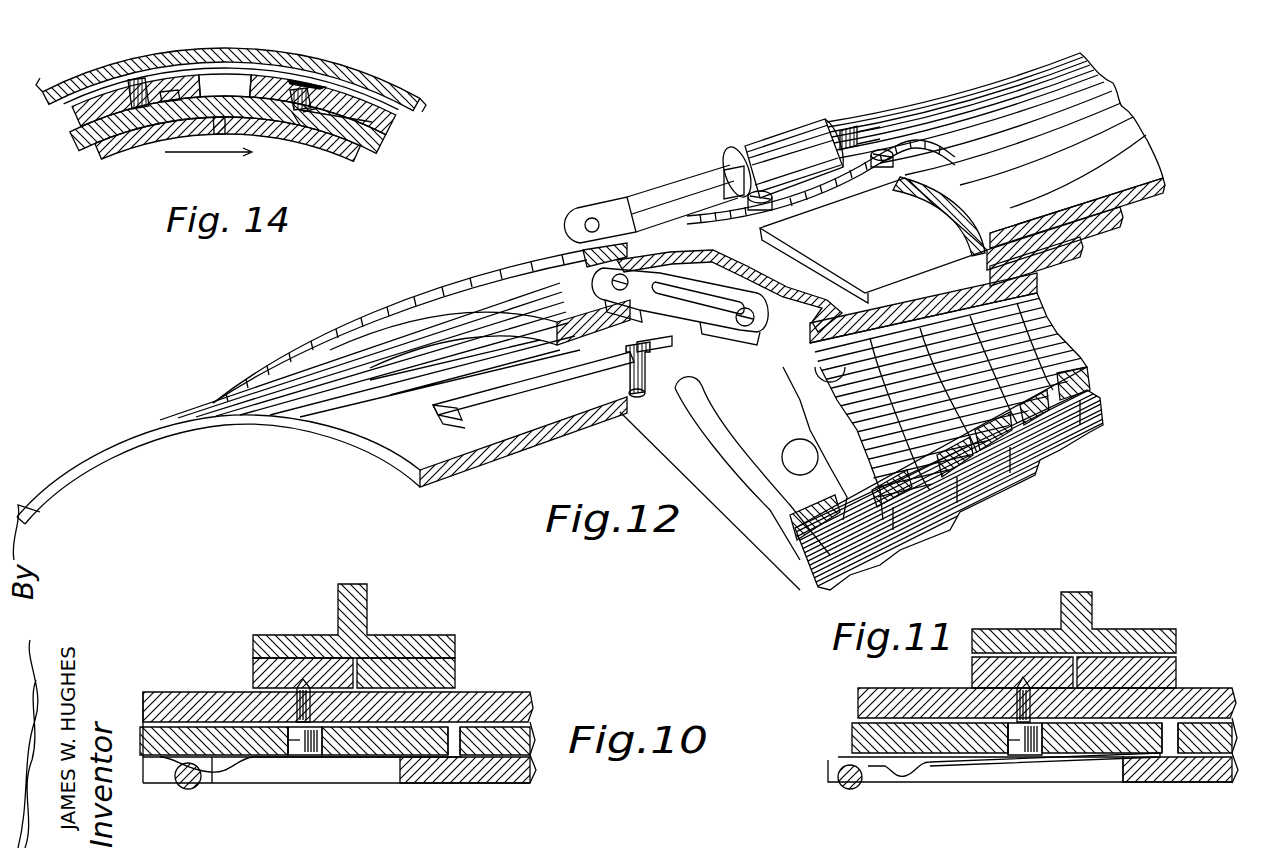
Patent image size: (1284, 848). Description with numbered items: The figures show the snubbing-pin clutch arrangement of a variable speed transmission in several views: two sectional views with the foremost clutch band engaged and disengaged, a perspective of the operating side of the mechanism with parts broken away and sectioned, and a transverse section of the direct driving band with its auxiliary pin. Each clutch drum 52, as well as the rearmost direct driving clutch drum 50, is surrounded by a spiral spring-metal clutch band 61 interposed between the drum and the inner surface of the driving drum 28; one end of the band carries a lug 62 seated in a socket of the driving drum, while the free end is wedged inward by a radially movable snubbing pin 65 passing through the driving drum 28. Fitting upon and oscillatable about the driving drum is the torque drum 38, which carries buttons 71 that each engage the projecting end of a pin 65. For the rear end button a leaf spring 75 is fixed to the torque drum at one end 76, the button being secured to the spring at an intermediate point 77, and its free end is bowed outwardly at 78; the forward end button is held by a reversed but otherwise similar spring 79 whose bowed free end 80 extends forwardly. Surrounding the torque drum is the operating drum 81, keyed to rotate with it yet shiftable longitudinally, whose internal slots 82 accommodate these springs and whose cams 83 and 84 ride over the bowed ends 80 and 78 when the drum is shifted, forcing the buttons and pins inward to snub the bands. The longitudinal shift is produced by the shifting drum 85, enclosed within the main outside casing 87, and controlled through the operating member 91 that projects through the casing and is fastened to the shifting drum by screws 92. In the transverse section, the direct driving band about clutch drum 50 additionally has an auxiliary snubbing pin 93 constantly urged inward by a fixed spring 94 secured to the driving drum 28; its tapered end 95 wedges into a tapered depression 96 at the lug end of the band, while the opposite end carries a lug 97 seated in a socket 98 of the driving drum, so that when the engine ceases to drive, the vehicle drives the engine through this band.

In FIG. 14, the driving drum 28 is at (386, 136).
In FIG. 10, the driving drum 28 is at (478, 698).
In FIG. 11, the driving drum 28 is at (1205, 700).
In FIG. 12, the torque drum 38 is at (350, 418).
In FIG. 10, the torque drum 38 is at (542, 742).
In FIG. 11, the torque drum 38 is at (1210, 738).
In FIG. 14, the clutch drum 50 is at (122, 132).
In FIG. 12, the clutch drum 52 is at (1050, 450).
In FIG. 10, the clutch drum 52 is at (392, 645).
In FIG. 11, the clutch drum 52 is at (1112, 640).
In FIG. 14, the clutch band 61 is at (345, 135).
In FIG. 12, the clutch band 61 is at (1058, 352).
In FIG. 10, the clutch band 61 is at (270, 664).
In FIG. 11, the clutch band 61 is at (1150, 670).
In FIG. 14, the lug 62 is at (290, 90).
In FIG. 12, the lug 62 is at (795, 462).
In FIG. 14, the snubbing pin 65 is at (130, 80).
In FIG. 10, the snubbing pin 65 is at (292, 692).
In FIG. 11, the snubbing pin 65 is at (1012, 698).
In FIG. 12, the button 71 is at (672, 340).
In FIG. 10, the button 71 is at (312, 752).
In FIG. 11, the button 71 is at (1020, 758).
In FIG. 12, the leaf spring 75 is at (538, 382).
In FIG. 12, the fixed end 76 is at (462, 418).
In FIG. 12, the button securing point 77 is at (634, 397).
In FIG. 10, the button securing point 77 is at (305, 760).
In FIG. 11, the button securing point 77 is at (1030, 756).
In FIG. 12, the outwardly bowed end 78 is at (715, 330).
In FIG. 10, the spring 79 is at (290, 756).
In FIG. 11, the spring 79 is at (980, 762).
In FIG. 10, the outwardly bowed free end 80 is at (210, 775).
In FIG. 11, the outwardly bowed free end 80 is at (905, 775).
In FIG. 12, the operating drum 81 is at (368, 337).
In FIG. 10, the operating drum 81 is at (462, 772).
In FIG. 11, the operating drum 81 is at (1160, 775).
In FIG. 10, the slot 82 is at (362, 775).
In FIG. 11, the slot 82 is at (955, 775).
In FIG. 10, the cam 83 is at (186, 790).
In FIG. 11, the cam 83 is at (852, 790).
In FIG. 12, the cam 84 is at (660, 300).
In FIG. 12, the shifting drum 85 is at (873, 240).
In FIG. 12, the main outside casing 87 is at (995, 143).
In FIG. 12, the operating member 91 is at (780, 160).
In FIG. 12, the screw 92 is at (770, 210).
In FIG. 14, the auxiliary snubbing pin 93 is at (325, 87).
In FIG. 14, the fixed spring 94 is at (372, 118).
In FIG. 14, the tapered end 95 is at (300, 120).
In FIG. 14, the tapered depression 96 is at (308, 118).
In FIG. 14, the lug 97 is at (172, 92).
In FIG. 14, the socket 98 is at (158, 128).